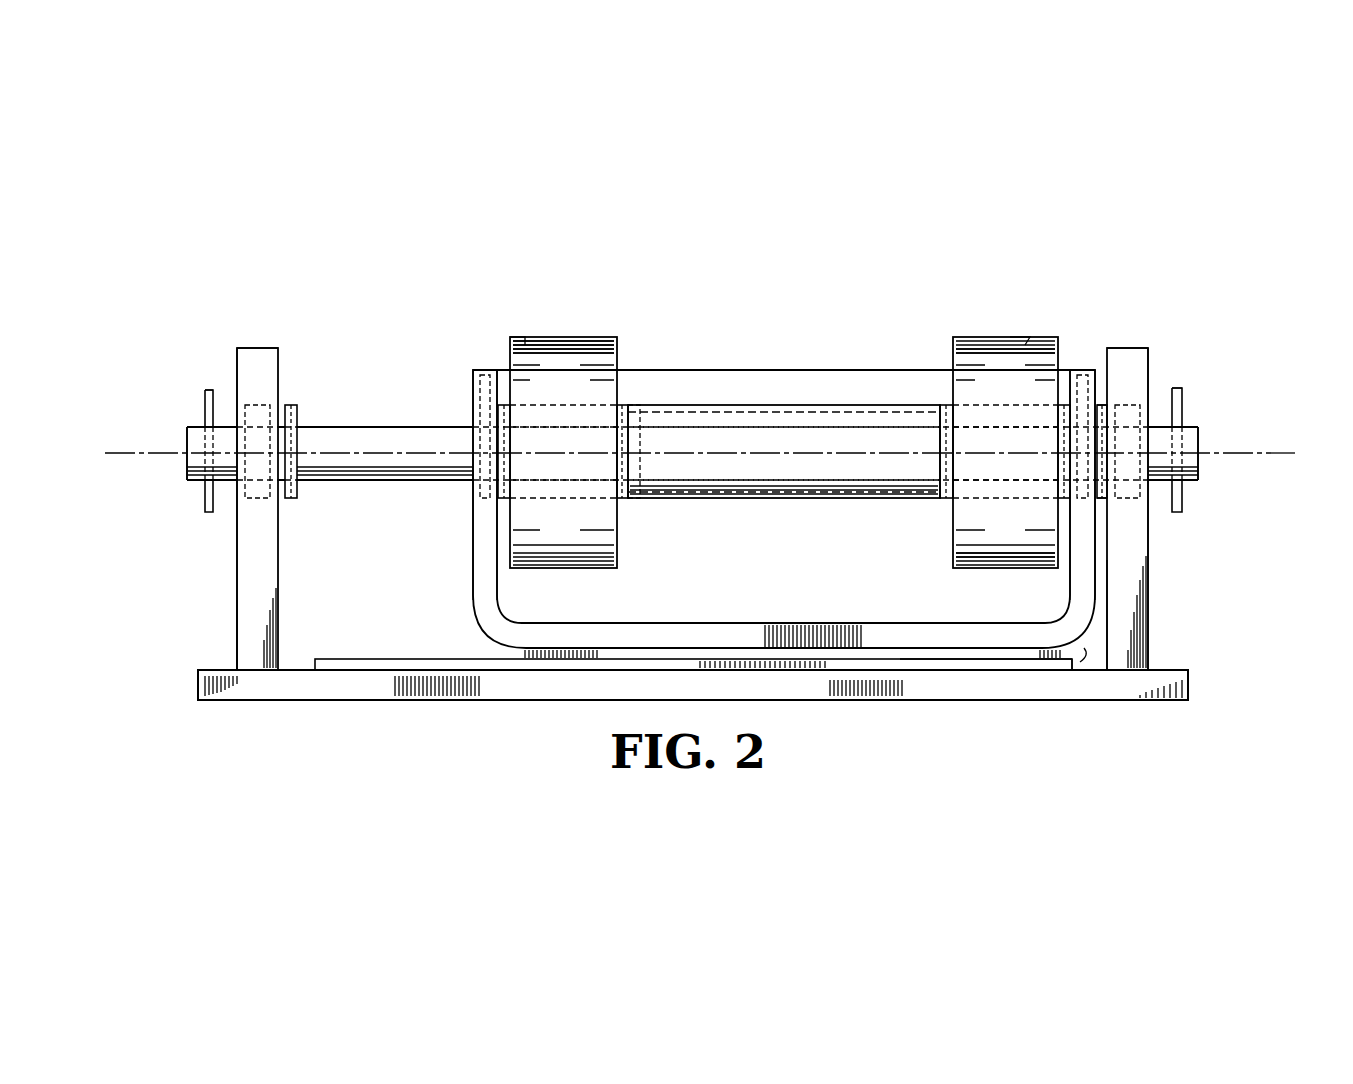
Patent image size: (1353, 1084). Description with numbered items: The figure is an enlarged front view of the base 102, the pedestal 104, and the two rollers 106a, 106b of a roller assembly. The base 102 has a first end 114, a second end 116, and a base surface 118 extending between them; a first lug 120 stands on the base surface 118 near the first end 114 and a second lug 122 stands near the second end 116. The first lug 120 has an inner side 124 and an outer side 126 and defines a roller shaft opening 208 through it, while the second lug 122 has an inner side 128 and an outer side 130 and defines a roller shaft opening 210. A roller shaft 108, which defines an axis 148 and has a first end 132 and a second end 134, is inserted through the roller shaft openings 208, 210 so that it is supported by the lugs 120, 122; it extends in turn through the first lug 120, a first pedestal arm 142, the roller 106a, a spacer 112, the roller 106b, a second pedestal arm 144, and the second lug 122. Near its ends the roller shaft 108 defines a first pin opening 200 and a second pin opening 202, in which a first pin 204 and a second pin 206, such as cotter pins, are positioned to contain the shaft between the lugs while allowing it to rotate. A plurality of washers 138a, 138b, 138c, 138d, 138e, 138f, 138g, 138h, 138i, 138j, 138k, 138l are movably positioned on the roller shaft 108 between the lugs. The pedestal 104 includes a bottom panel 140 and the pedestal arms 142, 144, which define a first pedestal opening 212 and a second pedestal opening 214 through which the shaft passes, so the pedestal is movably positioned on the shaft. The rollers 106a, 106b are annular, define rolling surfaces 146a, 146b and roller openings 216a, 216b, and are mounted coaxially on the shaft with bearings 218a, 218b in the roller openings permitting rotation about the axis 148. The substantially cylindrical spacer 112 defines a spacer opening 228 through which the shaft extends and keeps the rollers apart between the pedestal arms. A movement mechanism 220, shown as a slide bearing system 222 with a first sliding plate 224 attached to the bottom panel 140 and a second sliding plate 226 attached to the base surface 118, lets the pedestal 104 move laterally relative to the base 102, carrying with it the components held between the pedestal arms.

The base 102 is at (373, 688).
The pedestal 104 is at (540, 660).
The roller 106a is at (517, 550).
The roller 106b is at (985, 340).
The roller shaft 108 is at (1198, 427).
The spacer 112 is at (666, 505).
The first end 114 is at (198, 685).
The second end 116 is at (1190, 688).
The base surface 118 is at (298, 665).
The first lug 120 is at (243, 637).
The second lug 122 is at (1140, 652).
The inner side 124 is at (277, 580).
The outer side 126 is at (240, 578).
The inner side 128 is at (1140, 622).
The outer side 130 is at (1150, 580).
The first end 132 is at (187, 440).
The second end 134 is at (1200, 440).
The washer 138a is at (290, 500).
The washer 138b is at (297, 410).
The washer 138c is at (492, 390).
The washer 138d is at (503, 405).
The washer 138e is at (622, 405).
The washer 138f is at (635, 405).
The washer 138g is at (940, 408).
The washer 138h is at (955, 405).
The washer 138i is at (1063, 405).
The washer 138j is at (1098, 405).
The washer 138k is at (1104, 405).
The washer 138l is at (1130, 420).
The bottom panel 140 is at (762, 635).
The first pedestal arm 142 is at (480, 587).
The second pedestal arm 144 is at (1087, 580).
The rolling surface 146a is at (525, 345).
The rolling surface 146b is at (1025, 345).
The axis 148 is at (128, 455).
The first pin opening 200 is at (187, 470).
The second pin opening 202 is at (1200, 480).
The first pin 204 is at (200, 395).
The second pin 206 is at (1180, 395).
The roller shaft opening 208 is at (262, 378).
The roller shaft opening 210 is at (1127, 483).
The first pedestal opening 212 is at (490, 490).
The second pedestal opening 214 is at (1090, 395).
The roller opening 216a is at (557, 407).
The roller opening 216b is at (975, 412).
The bearing 218a is at (588, 403).
The bearing 218b is at (975, 487).
The movement mechanism 220 is at (1090, 655).
The slide bearing system 222 is at (993, 663).
The first sliding plate 224 is at (840, 653).
The second sliding plate 226 is at (922, 665).
The spacer opening 228 is at (762, 403).